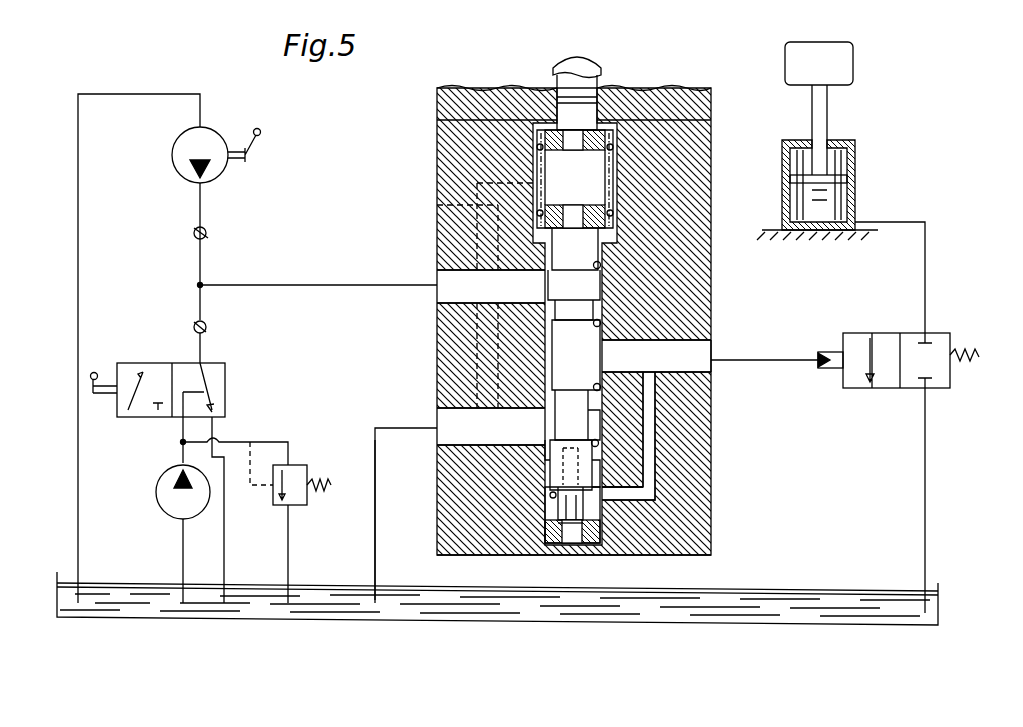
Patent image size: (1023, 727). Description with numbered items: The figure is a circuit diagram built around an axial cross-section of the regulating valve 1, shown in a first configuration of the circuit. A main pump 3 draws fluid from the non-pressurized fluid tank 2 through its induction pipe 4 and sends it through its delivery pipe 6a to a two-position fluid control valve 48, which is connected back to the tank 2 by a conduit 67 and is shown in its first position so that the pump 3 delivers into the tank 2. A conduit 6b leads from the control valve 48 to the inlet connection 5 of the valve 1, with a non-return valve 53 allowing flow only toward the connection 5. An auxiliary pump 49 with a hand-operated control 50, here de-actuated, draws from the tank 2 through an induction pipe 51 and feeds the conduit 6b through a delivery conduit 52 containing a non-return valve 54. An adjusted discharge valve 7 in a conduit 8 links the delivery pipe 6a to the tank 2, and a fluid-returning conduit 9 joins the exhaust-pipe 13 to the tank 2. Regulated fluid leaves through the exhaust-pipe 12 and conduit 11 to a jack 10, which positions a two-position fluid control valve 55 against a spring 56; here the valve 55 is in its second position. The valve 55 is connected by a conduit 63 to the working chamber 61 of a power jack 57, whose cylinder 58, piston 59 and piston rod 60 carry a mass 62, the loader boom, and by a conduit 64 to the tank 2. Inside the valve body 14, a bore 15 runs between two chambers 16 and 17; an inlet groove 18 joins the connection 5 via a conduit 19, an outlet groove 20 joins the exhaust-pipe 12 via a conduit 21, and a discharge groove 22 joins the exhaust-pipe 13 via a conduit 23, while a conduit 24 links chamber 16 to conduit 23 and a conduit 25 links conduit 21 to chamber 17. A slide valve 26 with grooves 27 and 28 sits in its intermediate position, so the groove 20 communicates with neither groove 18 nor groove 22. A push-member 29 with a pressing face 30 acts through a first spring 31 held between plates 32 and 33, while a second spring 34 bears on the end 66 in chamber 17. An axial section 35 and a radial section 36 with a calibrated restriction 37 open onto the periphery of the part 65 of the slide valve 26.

The regulating valve 1 is at (718, 164).
The non-pressurized fluid tank 2 is at (940, 599).
The main pump 3 is at (160, 490).
The induction pipe 4 is at (175, 532).
The inlet connection 5 is at (436, 270).
The delivery pipe 6a is at (183, 446).
The conduit 6b is at (243, 287).
The adjusted discharge valve 7 is at (302, 465).
The conduit 8 is at (241, 440).
The fluid-returning conduit 9 is at (374, 436).
The jack 10 is at (830, 368).
The conduit 11 is at (775, 358).
The exhaust-pipe 12 is at (718, 356).
The fluid exhaust-pipe 13 is at (436, 412).
The valve body 14 is at (711, 547).
The bore 15 is at (601, 266).
The chamber 16 is at (588, 178).
The chamber 17 is at (598, 520).
The inlet groove 18 is at (548, 290).
The conduit 19 is at (450, 292).
The outlet groove 20 is at (552, 345).
The conduit 21 is at (667, 364).
The discharge groove 22 is at (560, 452).
The conduit 23 is at (450, 440).
The conduit 24 is at (450, 200).
The conduit 25 is at (630, 500).
The slide valve 26 is at (655, 486).
The groove 27 is at (600, 290).
The groove 28 is at (600, 412).
The push-member 29 is at (587, 108).
The pressing face 30 is at (593, 57).
The first spring 31 is at (605, 213).
The plate 32 is at (592, 150).
The plate 33 is at (598, 236).
The second spring 34 is at (566, 512).
The axial section 35 is at (596, 462).
The radial section 36 is at (545, 432).
The calibrated restriction 37 is at (560, 480).
The two-position fluid control valve 48 is at (135, 360).
The auxiliary pump 49 is at (173, 143).
The hand-operated control 50 is at (258, 130).
The induction pipe 51 is at (78, 188).
The delivery conduit 52 is at (200, 252).
The non-return valve 53 is at (197, 324).
The non-return valve 54 is at (208, 234).
The two-position fluid control valve 55 is at (943, 330).
The spring 56 is at (968, 350).
The power jack 57 is at (863, 162).
The cylinder 58 is at (840, 210).
The piston 59 is at (836, 180).
The piston rod 60 is at (824, 117).
The working chamber 61 is at (810, 192).
The mass 62 is at (826, 77).
The conduit 63 is at (925, 233).
The conduit 64 is at (925, 430).
The part of the slide valve 65 is at (550, 496).
The end of the slide valve 66 is at (558, 528).
The conduit 67 is at (224, 542).